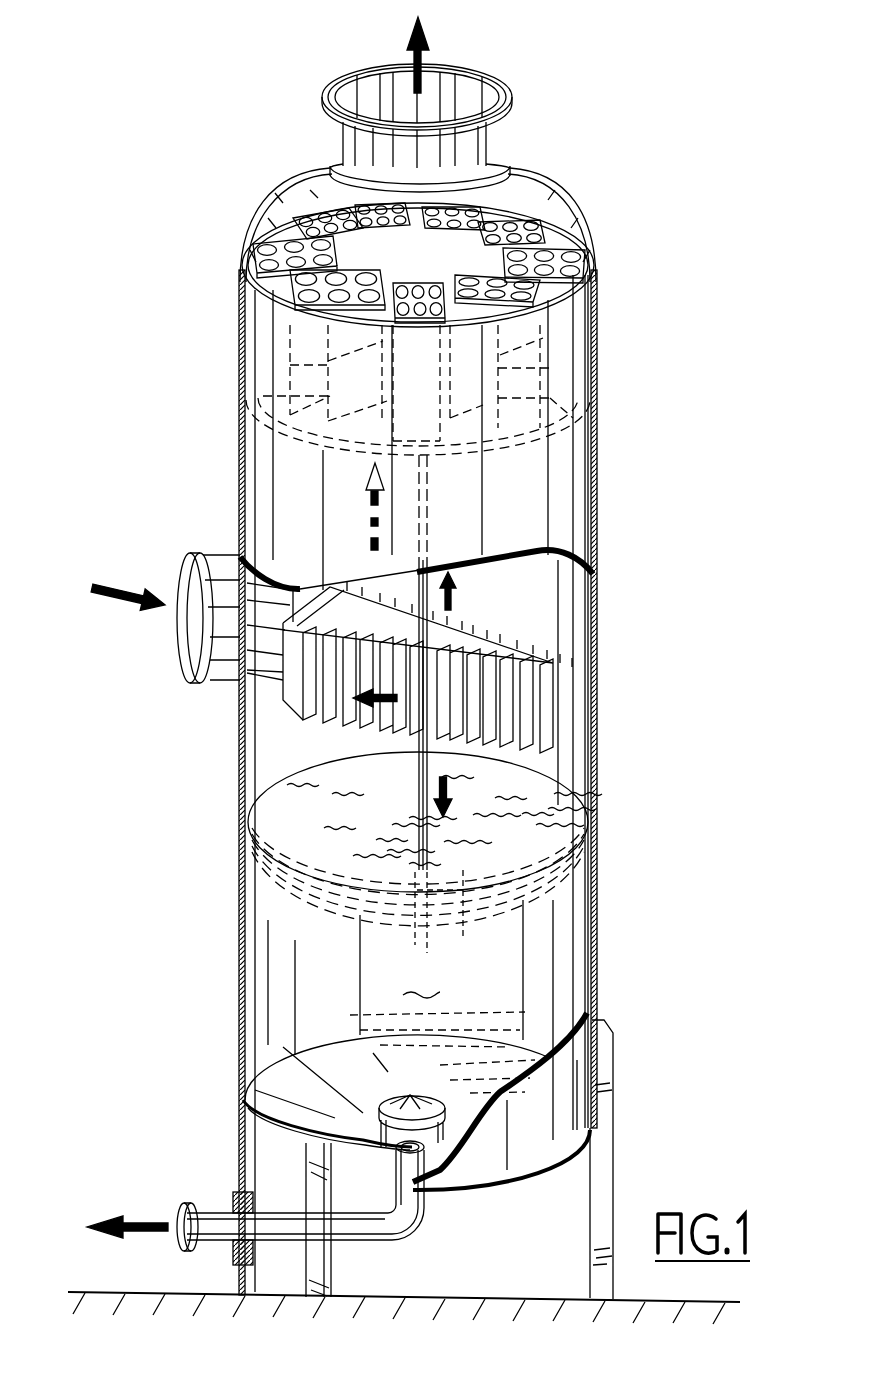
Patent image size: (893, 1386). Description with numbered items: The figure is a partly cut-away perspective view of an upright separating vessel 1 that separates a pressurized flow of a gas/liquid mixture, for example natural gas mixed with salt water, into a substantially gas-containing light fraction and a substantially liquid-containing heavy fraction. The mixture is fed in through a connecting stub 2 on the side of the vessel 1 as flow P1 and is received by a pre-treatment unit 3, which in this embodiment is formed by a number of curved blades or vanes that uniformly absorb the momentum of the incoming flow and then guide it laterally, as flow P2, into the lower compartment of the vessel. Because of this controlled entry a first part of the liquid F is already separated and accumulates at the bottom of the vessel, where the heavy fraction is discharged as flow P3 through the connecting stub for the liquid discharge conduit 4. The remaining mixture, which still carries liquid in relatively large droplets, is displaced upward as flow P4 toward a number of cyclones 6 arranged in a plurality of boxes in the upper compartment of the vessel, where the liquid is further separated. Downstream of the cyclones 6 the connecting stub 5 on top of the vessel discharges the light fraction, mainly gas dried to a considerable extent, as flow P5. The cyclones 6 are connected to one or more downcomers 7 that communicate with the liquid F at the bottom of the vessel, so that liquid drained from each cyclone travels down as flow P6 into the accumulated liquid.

The separating vessel 1 is at (600, 503).
The connecting stub 2 is at (222, 553).
The pre-treatment unit 3 is at (312, 700).
The liquid discharge conduit 4 is at (438, 250).
The connecting stub 5 is at (498, 96).
The cyclones 6 is at (256, 252).
The downcomers 7 is at (413, 812).
The gas/liquid flow introduced in the vessel P1 is at (112, 590).
The lateral gas/liquid flow P2 is at (341, 742).
The liquid accumulation at the bottom P3 is at (113, 1227).
The upward displacement of the mixture P4 is at (358, 506).
The light fraction discharge flow P5 is at (436, 55).
The liquid drainage flow from the cyclones P6 is at (462, 805).
The liquid F is at (421, 981).